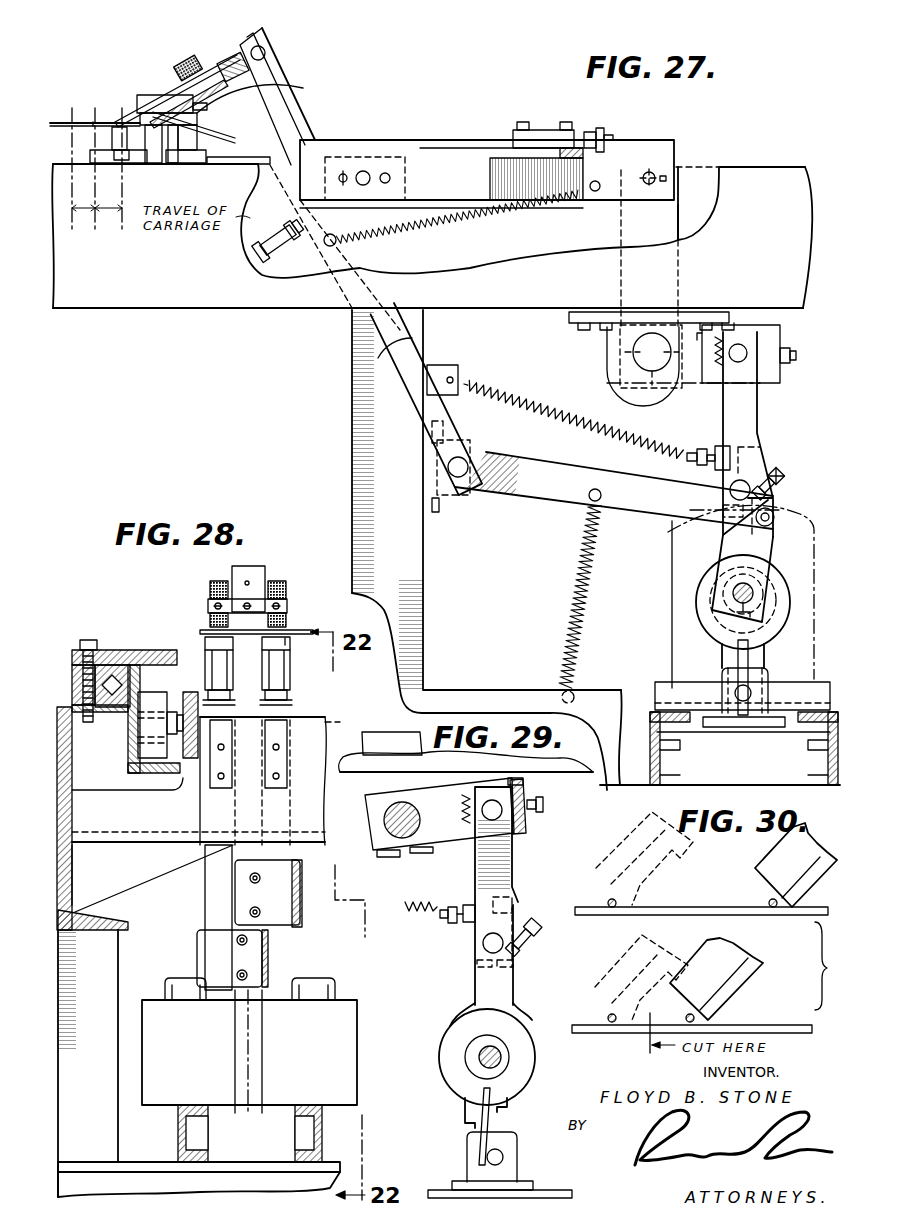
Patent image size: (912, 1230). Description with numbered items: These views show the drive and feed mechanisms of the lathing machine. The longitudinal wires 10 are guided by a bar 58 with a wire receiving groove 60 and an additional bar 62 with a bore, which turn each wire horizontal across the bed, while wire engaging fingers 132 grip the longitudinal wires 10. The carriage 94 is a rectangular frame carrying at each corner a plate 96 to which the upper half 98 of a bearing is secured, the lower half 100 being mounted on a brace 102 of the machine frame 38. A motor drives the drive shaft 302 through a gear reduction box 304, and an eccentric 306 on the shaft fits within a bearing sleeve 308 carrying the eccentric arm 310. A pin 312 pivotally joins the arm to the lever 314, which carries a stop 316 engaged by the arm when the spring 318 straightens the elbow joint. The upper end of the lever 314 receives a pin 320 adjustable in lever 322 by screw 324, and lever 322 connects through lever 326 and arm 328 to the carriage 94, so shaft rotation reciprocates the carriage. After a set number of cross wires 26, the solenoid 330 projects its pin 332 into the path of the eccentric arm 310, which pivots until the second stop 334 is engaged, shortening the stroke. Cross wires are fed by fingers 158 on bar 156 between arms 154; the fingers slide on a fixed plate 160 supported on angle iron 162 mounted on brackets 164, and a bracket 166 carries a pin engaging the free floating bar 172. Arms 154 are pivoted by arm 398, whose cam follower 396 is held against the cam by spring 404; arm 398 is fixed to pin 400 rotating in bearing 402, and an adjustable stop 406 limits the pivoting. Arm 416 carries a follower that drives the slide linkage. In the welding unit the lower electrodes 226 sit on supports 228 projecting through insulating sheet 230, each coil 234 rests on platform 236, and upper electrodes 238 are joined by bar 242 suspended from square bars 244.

In FIG. 27, the longitudinal wire 10 is at (72, 123).
In FIG. 28, the longitudinal wire 10 is at (272, 634).
In FIG. 30, the longitudinal wire 10 is at (672, 907).
In FIG. 27, the cross wire 26 is at (93, 122).
In FIG. 28, the cross wire 26 is at (287, 642).
In FIG. 30, the cross wire 26 is at (608, 900).
In FIG. 28, the machine frame 38 is at (122, 948).
In FIG. 27, the bar 58 is at (173, 158).
In FIG. 28, the wire receiving groove 60 is at (283, 720).
In FIG. 27, the additional bar 62 is at (153, 160).
In FIG. 27, the carriage 94 is at (413, 148).
In FIG. 28, the carriage 94 is at (135, 652).
In FIG. 27, the plate 96 is at (547, 133).
In FIG. 28, the plate 96 is at (106, 652).
In FIG. 28, the upper half of bearing 98 is at (80, 648).
In FIG. 28, the lower half of bearing 100 is at (78, 688).
In FIG. 28, the brace 102 is at (70, 868).
In FIG. 30, the wire engaging finger 132 is at (678, 858).
In FIG. 27, the arm 154 is at (312, 118).
In FIG. 27, the bar 156 is at (277, 63).
In FIG. 27, the finger 158 is at (121, 117).
In FIG. 27, the fixed plate 160 is at (174, 97).
In FIG. 27, the angle iron 162 is at (221, 97).
In FIG. 27, the bracket 164 is at (248, 115).
In FIG. 27, the bracket 166 is at (197, 68).
In FIG. 27, the free floating bar 172 is at (176, 62).
In FIG. 27, the lower electrode 226 is at (110, 132).
In FIG. 28, the lower electrode 226 is at (205, 641).
In FIG. 28, the support 228 is at (286, 860).
In FIG. 28, the insulating sheet 230 is at (325, 723).
In FIG. 28, the coil 234 is at (357, 1020).
In FIG. 28, the platform 236 is at (178, 1134).
In FIG. 28, the upper electrode 238 is at (214, 578).
In FIG. 28, the bar 242 is at (288, 600).
In FIG. 28, the square bar 244 is at (263, 575).
In FIG. 27, the drive shaft 302 is at (740, 594).
In FIG. 29, the drive shaft 302 is at (502, 1058).
In FIG. 27, the gear reduction box 304 is at (684, 611).
In FIG. 27, the eccentric 306 is at (780, 565).
In FIG. 29, the eccentric 306 is at (500, 1036).
In FIG. 27, the bearing sleeve 308 is at (722, 623).
In FIG. 29, the bearing sleeve 308 is at (463, 1030).
In FIG. 27, the eccentric arm 310 is at (706, 634).
In FIG. 29, the eccentric arm 310 is at (440, 1063).
In FIG. 27, the pin 312 is at (745, 482).
In FIG. 29, the pin 312 is at (483, 942).
In FIG. 27, the lever 314 is at (752, 402).
In FIG. 29, the lever 314 is at (505, 862).
In FIG. 29, the stop 316 is at (468, 903).
In FIG. 27, the spring 318 is at (516, 406).
In FIG. 29, the spring 318 is at (406, 902).
In FIG. 27, the pin 320 is at (748, 352).
In FIG. 29, the pin 320 is at (497, 812).
In FIG. 27, the lever 322 is at (707, 380).
In FIG. 29, the lever 322 is at (447, 838).
In FIG. 27, the screw 324 is at (786, 354).
In FIG. 29, the screw 324 is at (544, 803).
In FIG. 27, the lever 326 is at (676, 275).
In FIG. 29, the lever 326 is at (370, 738).
In FIG. 27, the arm 328 is at (676, 160).
In FIG. 28, the arm 328 is at (186, 700).
In FIG. 27, the solenoid 330 is at (766, 670).
In FIG. 29, the solenoid 330 is at (516, 1163).
In FIG. 27, the pin 332 is at (735, 693).
In FIG. 29, the pin 332 is at (500, 1150).
In FIG. 27, the second stop 334 is at (783, 480).
In FIG. 29, the second stop 334 is at (530, 925).
In FIG. 27, the cam follower 396 is at (773, 512).
In FIG. 27, the arm 398 is at (529, 497).
In FIG. 27, the pin 400 is at (474, 455).
In FIG. 27, the bearing 402 is at (461, 495).
In FIG. 27, the spring 404 is at (572, 610).
In FIG. 27, the adjustable stop 406 is at (297, 252).
In FIG. 27, the arm 416 is at (452, 234).